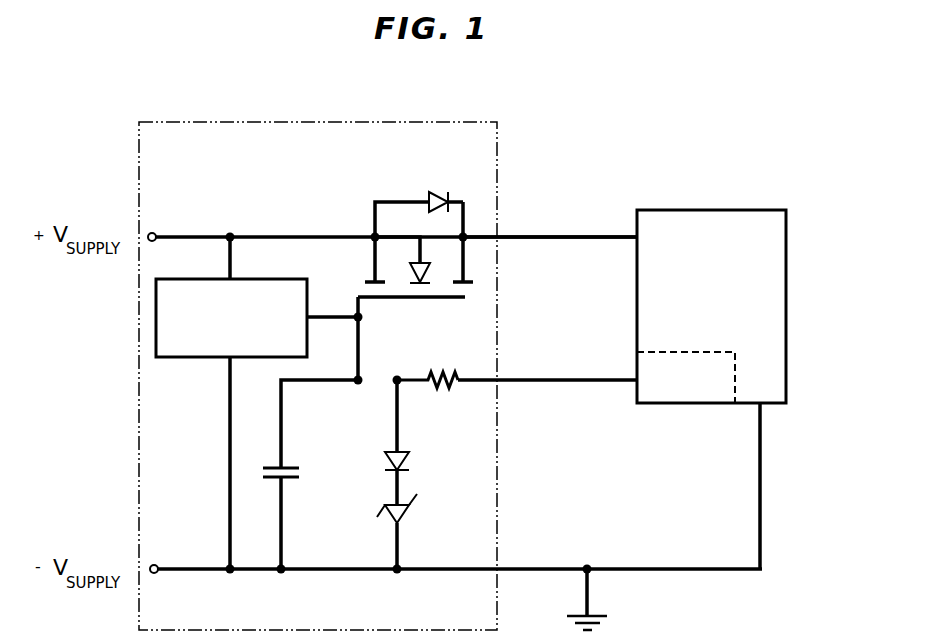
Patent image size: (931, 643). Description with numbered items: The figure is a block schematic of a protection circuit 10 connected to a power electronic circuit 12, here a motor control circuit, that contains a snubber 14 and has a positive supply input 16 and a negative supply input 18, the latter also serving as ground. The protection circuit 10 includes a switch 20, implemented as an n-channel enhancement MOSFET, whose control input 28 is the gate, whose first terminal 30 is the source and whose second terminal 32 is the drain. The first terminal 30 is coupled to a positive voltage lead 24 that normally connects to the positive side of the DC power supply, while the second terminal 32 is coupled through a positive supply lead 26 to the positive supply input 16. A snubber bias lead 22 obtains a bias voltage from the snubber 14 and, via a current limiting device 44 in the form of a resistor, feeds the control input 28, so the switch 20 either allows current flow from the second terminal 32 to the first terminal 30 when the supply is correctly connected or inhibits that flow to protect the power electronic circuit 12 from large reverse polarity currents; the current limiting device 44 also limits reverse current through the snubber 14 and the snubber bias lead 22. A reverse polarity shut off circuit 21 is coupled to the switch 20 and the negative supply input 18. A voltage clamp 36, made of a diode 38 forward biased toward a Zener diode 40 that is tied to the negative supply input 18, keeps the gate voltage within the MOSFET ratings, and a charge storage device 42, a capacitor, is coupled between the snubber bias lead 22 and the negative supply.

The protection circuit 10 is at (322, 118).
The power electronic circuit 12 is at (786, 216).
The snubber 14 is at (684, 404).
The positive supply input 16 is at (565, 236).
The negative supply input 18 is at (658, 571).
The switch 20 is at (437, 211).
The reverse polarity shut off circuit 21 is at (156, 305).
The snubber bias lead 22 is at (500, 381).
The positive voltage lead 24 is at (157, 232).
The positive supply lead 26 is at (500, 236).
The control input 28 is at (363, 378).
The first terminal 30 is at (372, 236).
The second terminal 32 is at (466, 240).
The voltage clamp 36 is at (395, 477).
The diode 38 is at (405, 450).
The Zener diode 40 is at (408, 512).
The charge storage device 42 is at (292, 478).
The current limiting device 44 is at (437, 374).